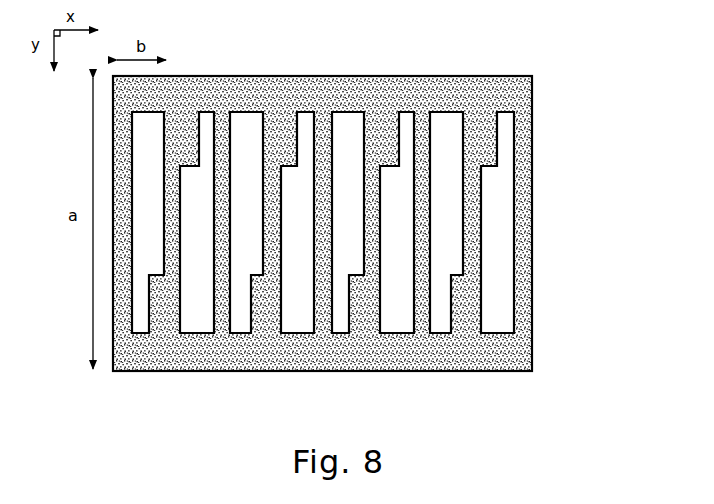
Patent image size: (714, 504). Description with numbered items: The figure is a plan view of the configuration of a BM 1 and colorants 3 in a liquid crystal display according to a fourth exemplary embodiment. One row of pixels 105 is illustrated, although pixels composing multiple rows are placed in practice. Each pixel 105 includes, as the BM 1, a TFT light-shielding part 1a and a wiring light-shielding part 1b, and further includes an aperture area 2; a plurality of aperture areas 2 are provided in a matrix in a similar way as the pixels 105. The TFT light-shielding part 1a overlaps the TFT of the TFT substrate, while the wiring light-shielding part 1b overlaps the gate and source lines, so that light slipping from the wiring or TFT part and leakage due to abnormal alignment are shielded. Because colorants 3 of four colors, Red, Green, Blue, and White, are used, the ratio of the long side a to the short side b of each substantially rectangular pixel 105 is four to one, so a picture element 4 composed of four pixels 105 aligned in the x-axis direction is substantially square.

The BM 1 is at (474, 52).
The TFT light-shielding part 1a is at (191, 121).
The wiring light-shielding part 1b is at (218, 121).
The aperture area 2 is at (513, 138).
The colorant 3 is at (510, 180).
The picture element 4 is at (322, 387).
The pixel 105 is at (524, 232).